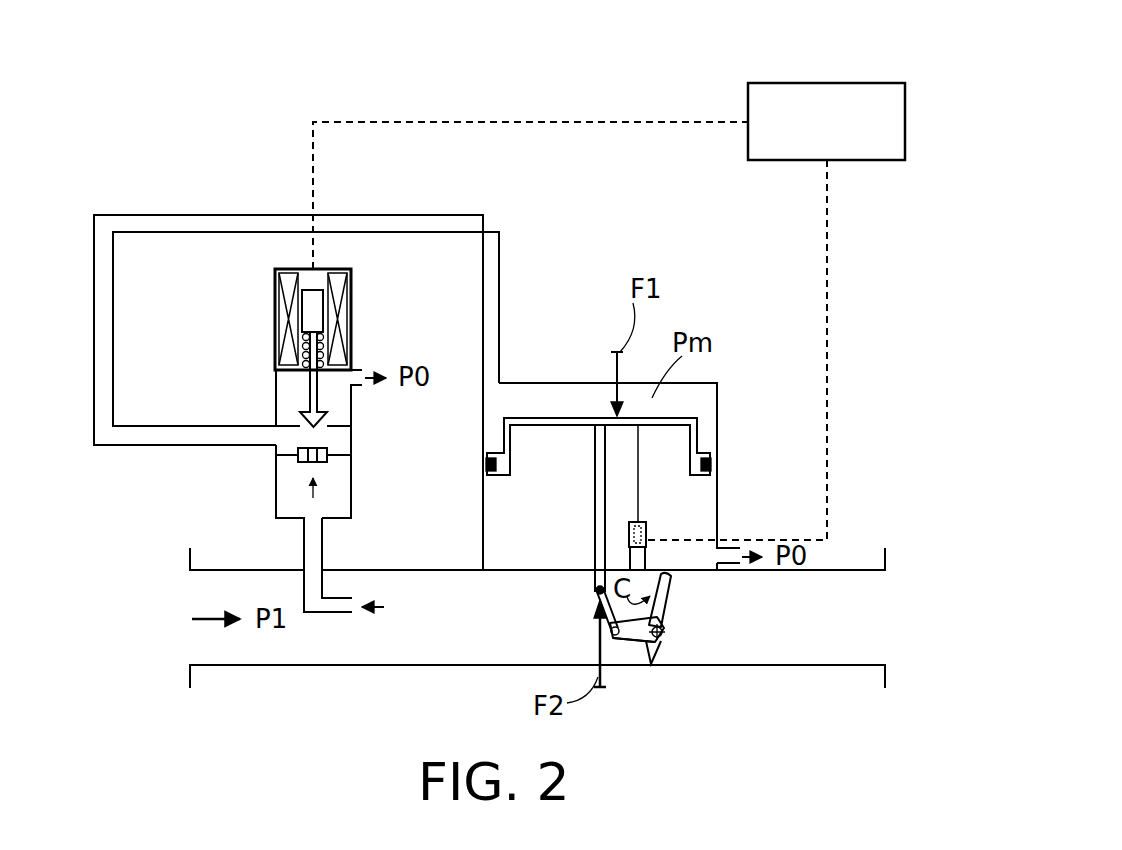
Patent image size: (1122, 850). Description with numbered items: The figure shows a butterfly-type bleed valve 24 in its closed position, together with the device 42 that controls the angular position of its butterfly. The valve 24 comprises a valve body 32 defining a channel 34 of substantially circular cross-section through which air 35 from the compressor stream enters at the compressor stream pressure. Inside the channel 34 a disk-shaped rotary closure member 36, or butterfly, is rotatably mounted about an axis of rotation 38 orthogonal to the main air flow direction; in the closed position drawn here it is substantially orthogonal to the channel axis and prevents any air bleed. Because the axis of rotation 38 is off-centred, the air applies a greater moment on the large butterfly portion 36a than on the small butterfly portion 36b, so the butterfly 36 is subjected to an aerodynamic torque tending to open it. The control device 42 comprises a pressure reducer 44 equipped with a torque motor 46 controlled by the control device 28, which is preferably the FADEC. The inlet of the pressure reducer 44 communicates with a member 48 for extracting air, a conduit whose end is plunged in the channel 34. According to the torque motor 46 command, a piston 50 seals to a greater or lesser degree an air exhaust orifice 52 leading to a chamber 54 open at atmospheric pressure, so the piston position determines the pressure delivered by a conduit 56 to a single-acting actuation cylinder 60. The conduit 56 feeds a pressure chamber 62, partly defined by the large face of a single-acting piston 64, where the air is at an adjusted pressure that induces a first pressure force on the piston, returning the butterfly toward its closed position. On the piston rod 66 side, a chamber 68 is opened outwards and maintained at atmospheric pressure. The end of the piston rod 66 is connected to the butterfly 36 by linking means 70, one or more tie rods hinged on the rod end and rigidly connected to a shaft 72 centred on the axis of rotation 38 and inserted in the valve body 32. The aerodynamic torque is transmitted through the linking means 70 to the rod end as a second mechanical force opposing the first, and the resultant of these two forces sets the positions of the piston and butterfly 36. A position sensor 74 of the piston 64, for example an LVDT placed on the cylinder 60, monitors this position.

The bleed valve 24 is at (210, 184).
The control device 28 is at (816, 106).
The valve body 32 is at (390, 667).
The channel 34 is at (481, 627).
The air 35 is at (205, 620).
The rotary closure member 36 is at (672, 617).
The large butterfly portion 36a is at (665, 583).
The small butterfly portion 36b is at (660, 652).
The axis of rotation 38 is at (663, 630).
The device for controlling the angular position of the butterfly 42 is at (77, 231).
The pressure reducer 44 is at (297, 435).
The torque motor 46 is at (353, 336).
The member for extracting air 48 is at (338, 597).
The piston 50 is at (303, 402).
The air exhaust orifice 52 is at (325, 430).
The chamber 54 is at (290, 387).
The conduit 56 is at (97, 355).
The single-acting actuation cylinder 60 is at (729, 412).
The pressure chamber 62 is at (578, 402).
The single-acting piston 64 is at (590, 537).
The piston rod 66 is at (598, 478).
The chamber 68 is at (700, 495).
The linking means 70 is at (600, 621).
The shaft 72 is at (642, 640).
The position sensor 74 is at (647, 533).